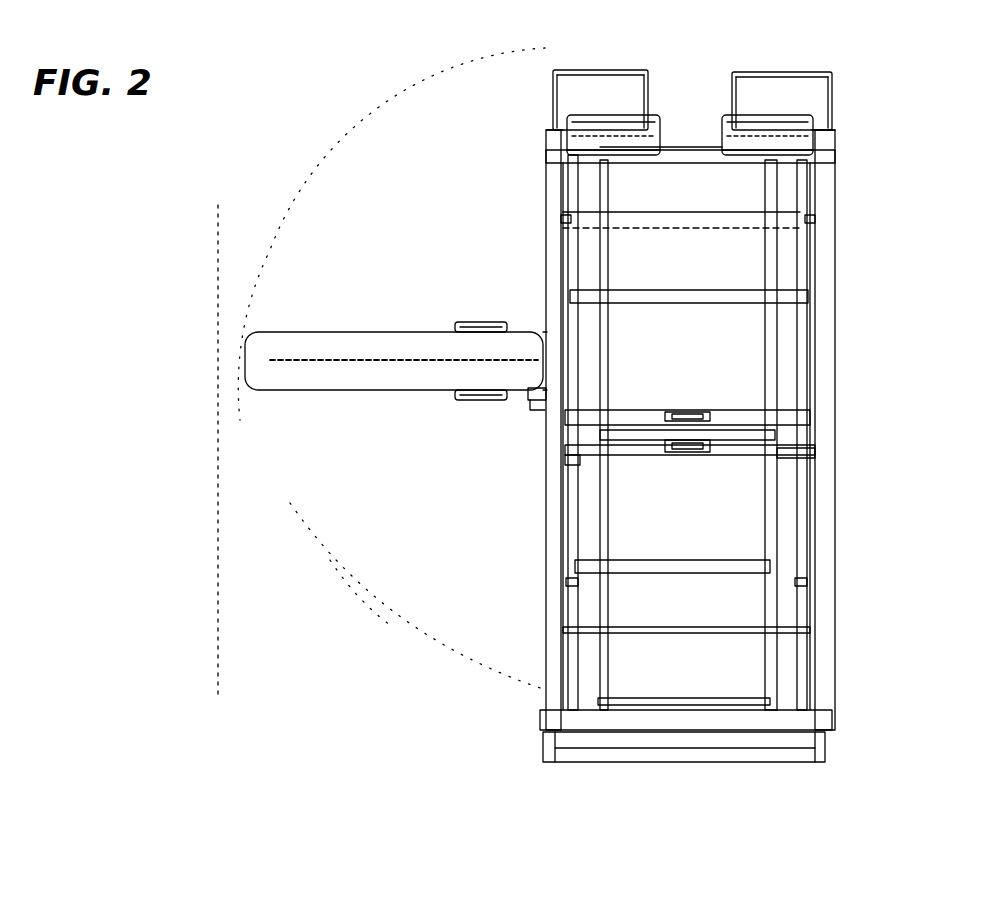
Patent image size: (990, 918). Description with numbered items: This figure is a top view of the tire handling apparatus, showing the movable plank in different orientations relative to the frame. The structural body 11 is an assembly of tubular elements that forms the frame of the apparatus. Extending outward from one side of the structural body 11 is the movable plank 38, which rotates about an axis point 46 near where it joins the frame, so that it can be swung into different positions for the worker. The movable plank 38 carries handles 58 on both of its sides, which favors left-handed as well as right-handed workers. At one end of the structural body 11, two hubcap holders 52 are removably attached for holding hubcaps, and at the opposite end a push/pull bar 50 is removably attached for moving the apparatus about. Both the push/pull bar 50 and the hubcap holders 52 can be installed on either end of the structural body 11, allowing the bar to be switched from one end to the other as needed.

The structural body 11 is at (848, 407).
The movable plank 38 is at (335, 386).
The axis point 46 is at (527, 395).
The push/pull bar 50 is at (715, 762).
The hubcap holders 52 is at (657, 117).
The handles 58 is at (468, 400).